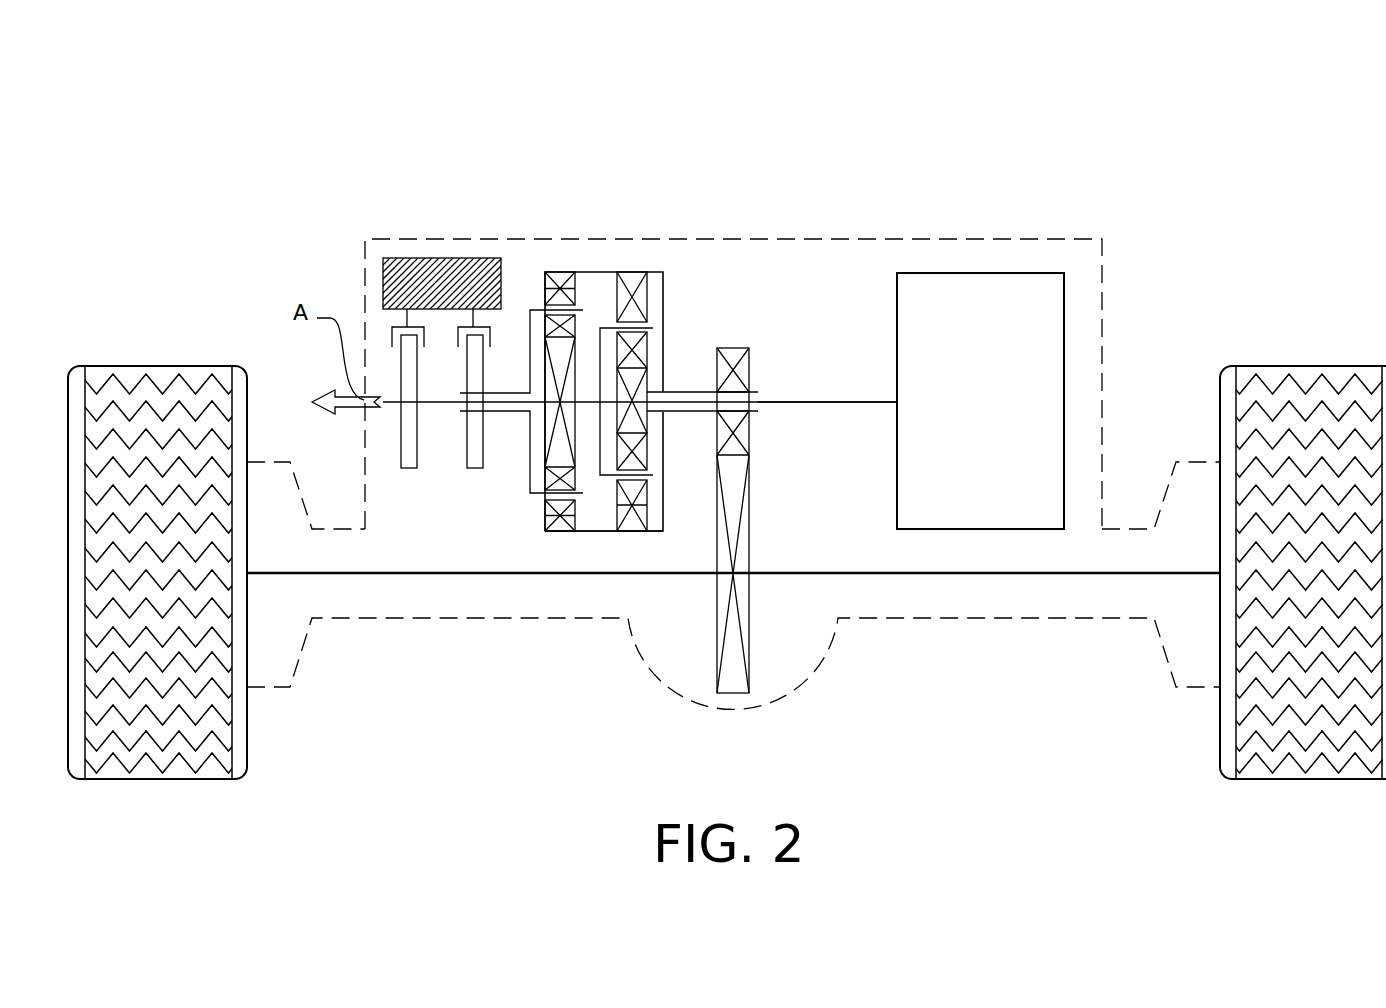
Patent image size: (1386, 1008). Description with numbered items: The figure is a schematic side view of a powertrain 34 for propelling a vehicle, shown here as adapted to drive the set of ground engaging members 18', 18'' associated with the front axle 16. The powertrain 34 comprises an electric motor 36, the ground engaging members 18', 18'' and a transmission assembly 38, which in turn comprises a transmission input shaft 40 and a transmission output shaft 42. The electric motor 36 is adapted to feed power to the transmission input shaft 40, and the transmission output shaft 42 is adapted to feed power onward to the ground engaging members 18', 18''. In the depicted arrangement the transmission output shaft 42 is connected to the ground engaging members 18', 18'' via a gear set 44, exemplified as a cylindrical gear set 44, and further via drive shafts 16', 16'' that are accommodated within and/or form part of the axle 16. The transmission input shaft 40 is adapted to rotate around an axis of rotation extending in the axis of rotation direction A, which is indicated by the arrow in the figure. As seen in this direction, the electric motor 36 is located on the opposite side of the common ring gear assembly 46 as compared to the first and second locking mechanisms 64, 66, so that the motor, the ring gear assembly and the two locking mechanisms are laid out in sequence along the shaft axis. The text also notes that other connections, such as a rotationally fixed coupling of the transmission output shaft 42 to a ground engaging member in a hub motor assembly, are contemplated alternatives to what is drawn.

The front axle 16 is at (733, 585).
The drive shaft 16' is at (490, 631).
The drive shaft 16'' is at (976, 631).
The ground engaging member 18' is at (157, 527).
The ground engaging member 18'' is at (1303, 528).
The powertrain 34 is at (842, 132).
The electric motor 36 is at (981, 273).
The transmission assembly 38 is at (517, 535).
The transmission input shaft 40 is at (848, 401).
The transmission output shaft 42 is at (686, 392).
The gear set 44 is at (767, 527).
The common ring gear assembly 46 is at (598, 272).
The first locking mechanism 64 is at (495, 337).
The second locking mechanism 66 is at (427, 335).